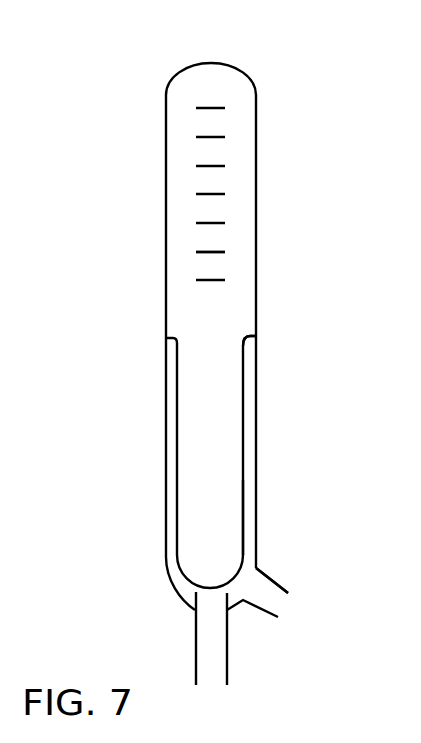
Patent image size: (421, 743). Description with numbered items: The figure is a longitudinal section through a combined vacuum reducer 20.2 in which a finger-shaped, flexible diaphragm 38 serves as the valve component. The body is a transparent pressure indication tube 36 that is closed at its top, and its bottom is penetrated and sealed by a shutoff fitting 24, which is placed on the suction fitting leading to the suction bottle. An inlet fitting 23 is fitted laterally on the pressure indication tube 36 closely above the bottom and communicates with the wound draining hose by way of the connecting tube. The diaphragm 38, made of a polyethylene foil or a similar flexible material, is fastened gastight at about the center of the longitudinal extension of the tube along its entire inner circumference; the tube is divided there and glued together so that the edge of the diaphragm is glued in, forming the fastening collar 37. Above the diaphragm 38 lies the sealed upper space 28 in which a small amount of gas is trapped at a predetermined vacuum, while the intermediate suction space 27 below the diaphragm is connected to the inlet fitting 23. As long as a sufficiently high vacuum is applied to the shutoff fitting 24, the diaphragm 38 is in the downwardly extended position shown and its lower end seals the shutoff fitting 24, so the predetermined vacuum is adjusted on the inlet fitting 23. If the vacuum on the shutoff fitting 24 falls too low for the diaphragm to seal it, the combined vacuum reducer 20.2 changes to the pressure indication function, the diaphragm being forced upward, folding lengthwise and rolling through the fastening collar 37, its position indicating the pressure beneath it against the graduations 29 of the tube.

The combined vacuum reducer 20.2 is at (314, 47).
The pressure indication tube 36 is at (259, 167).
The upper space 28 is at (240, 214).
The scale 29 is at (213, 252).
The intermediate suction space 27 is at (167, 564).
The fastening collar 37 is at (235, 332).
The finger-shaped diaphragm 38 is at (229, 531).
The inlet fitting 23 is at (270, 600).
The shutoff fitting 24 is at (210, 662).